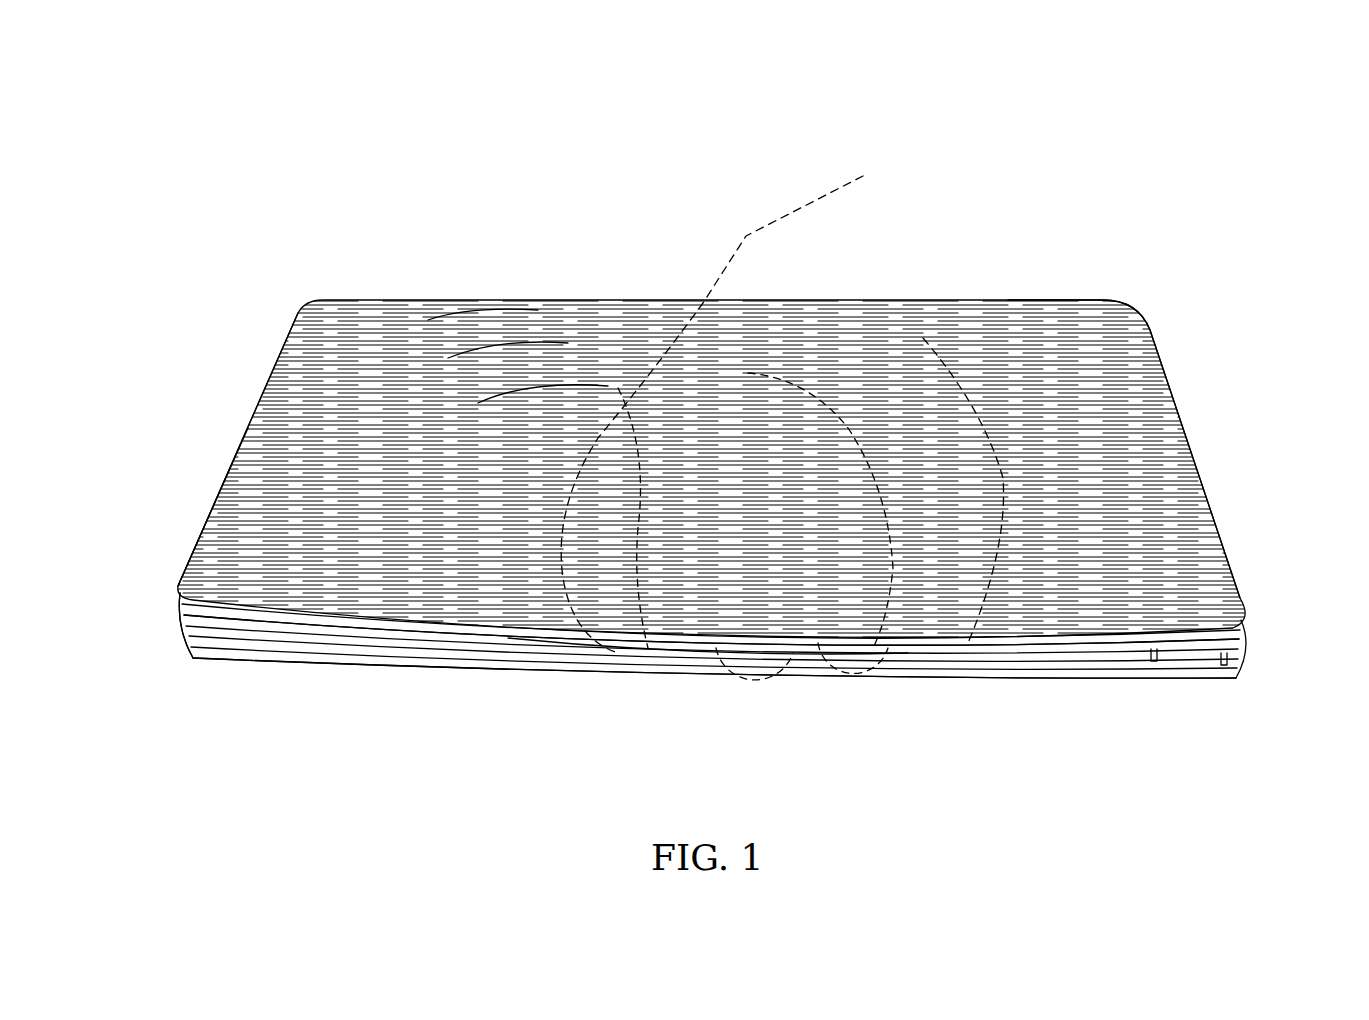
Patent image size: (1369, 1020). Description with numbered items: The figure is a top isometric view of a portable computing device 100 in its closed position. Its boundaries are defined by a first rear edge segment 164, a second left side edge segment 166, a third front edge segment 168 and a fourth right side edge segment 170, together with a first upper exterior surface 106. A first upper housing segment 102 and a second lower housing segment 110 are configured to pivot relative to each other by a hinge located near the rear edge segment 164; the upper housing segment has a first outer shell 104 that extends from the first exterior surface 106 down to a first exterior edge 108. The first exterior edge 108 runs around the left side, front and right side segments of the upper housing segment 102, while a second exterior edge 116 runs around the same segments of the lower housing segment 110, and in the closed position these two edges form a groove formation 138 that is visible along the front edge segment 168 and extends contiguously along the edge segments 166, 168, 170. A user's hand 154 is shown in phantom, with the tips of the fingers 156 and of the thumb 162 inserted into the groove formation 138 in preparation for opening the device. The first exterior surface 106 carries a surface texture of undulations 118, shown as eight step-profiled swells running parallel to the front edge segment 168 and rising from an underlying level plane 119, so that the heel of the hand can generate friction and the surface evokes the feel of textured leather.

The portable computing device 100 is at (371, 165).
The first (upper) housing segment 102 is at (258, 380).
The first outer shell 104 is at (1150, 676).
The first (upper) exterior surface 106 is at (1100, 320).
The first exterior edge 108 is at (165, 582).
The second (lower) housing segment 110 is at (265, 670).
The second exterior edge 116 is at (210, 648).
The undulations 118 is at (512, 352).
The underlying level plane 119 is at (440, 332).
The groove formation 138 is at (178, 620).
The user's hand 154 is at (852, 218).
The user's fingers 156 is at (683, 625).
The user's thumb 162 is at (848, 655).
The first (rear) edge segment 164 is at (626, 282).
The second (left side) edge segment 166 is at (170, 440).
The third (front) edge segment 168 is at (570, 672).
The fourth (right side) edge segment 170 is at (1195, 422).